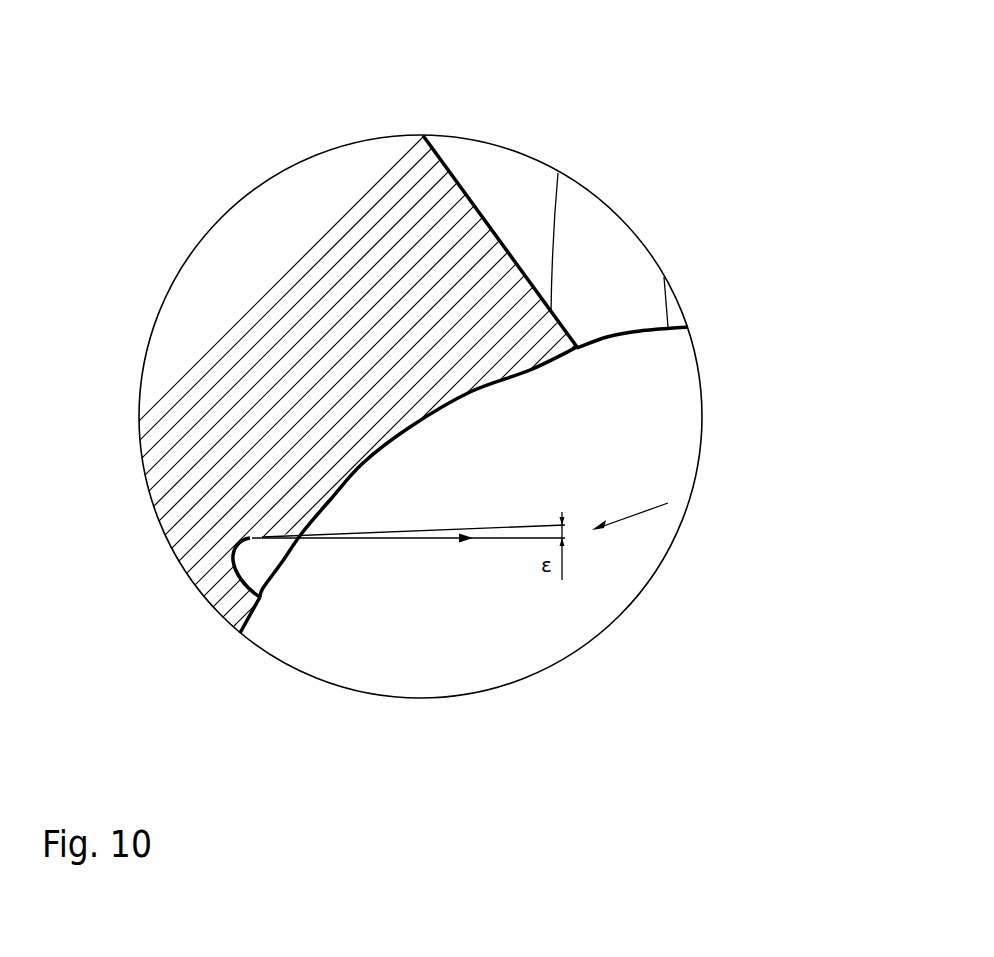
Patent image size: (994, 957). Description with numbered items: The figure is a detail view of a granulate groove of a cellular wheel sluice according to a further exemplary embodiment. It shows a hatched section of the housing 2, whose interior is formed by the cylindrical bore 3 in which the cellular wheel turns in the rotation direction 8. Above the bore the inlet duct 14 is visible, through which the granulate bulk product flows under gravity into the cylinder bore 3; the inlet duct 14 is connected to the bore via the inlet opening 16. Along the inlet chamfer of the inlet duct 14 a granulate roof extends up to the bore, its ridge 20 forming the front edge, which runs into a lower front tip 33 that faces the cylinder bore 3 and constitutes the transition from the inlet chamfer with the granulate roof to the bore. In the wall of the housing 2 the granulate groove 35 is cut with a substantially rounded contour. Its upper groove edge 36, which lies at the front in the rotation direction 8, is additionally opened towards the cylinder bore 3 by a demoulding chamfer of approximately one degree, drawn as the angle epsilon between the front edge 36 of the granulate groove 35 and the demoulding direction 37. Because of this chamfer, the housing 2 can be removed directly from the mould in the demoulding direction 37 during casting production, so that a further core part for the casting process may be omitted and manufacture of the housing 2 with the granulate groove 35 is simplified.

The housing 2 is at (148, 400).
The cylindrical bore 3 is at (541, 464).
The rotation direction 8 is at (640, 512).
The inlet duct 14 is at (631, 287).
The inlet opening 16 is at (657, 327).
The ridge 20 is at (472, 200).
The lower front tip 33 is at (577, 348).
The granulate groove 35 is at (245, 560).
The upper groove edge 36 is at (237, 551).
The demoulding direction 37 is at (412, 538).